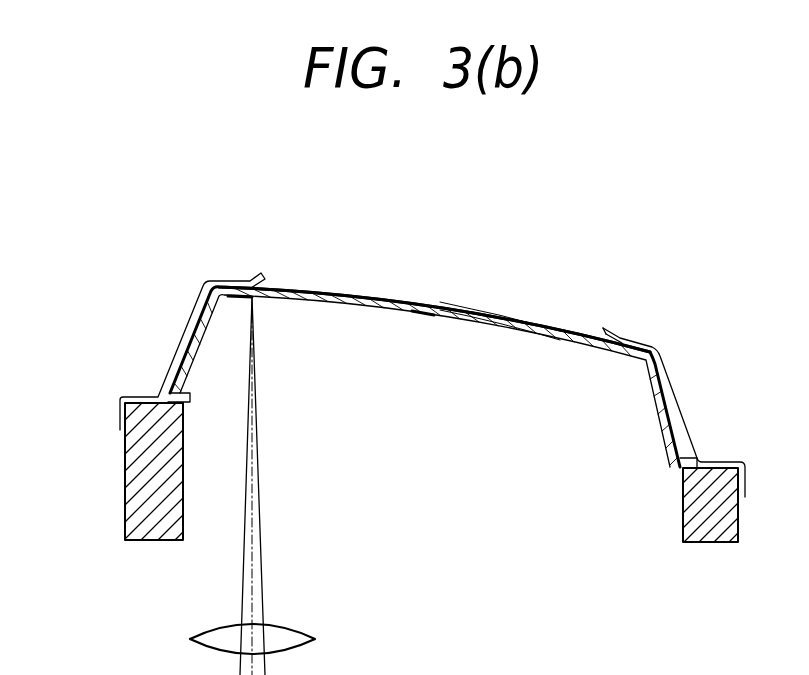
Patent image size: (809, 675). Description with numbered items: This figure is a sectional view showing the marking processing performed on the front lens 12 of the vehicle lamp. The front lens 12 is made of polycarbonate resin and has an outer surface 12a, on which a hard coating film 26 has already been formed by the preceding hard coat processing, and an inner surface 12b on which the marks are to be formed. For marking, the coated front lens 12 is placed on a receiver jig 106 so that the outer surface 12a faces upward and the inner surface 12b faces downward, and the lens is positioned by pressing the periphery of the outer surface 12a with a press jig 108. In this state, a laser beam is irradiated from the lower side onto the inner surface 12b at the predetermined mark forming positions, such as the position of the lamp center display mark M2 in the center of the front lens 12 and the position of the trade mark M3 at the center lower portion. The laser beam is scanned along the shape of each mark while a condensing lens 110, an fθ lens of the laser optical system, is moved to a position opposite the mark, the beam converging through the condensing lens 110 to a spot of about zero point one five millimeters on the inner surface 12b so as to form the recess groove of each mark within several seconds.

The front lens 12 is at (314, 289).
The hard coating film 26 is at (378, 297).
The outer surface 12a is at (476, 312).
The inner surface 12b is at (478, 322).
The trade mark M3 is at (262, 302).
The lamp center display mark M2 is at (424, 316).
The press jig 108 is at (651, 347).
The receiver jig 106 is at (695, 540).
The condensing lens 110 is at (290, 628).